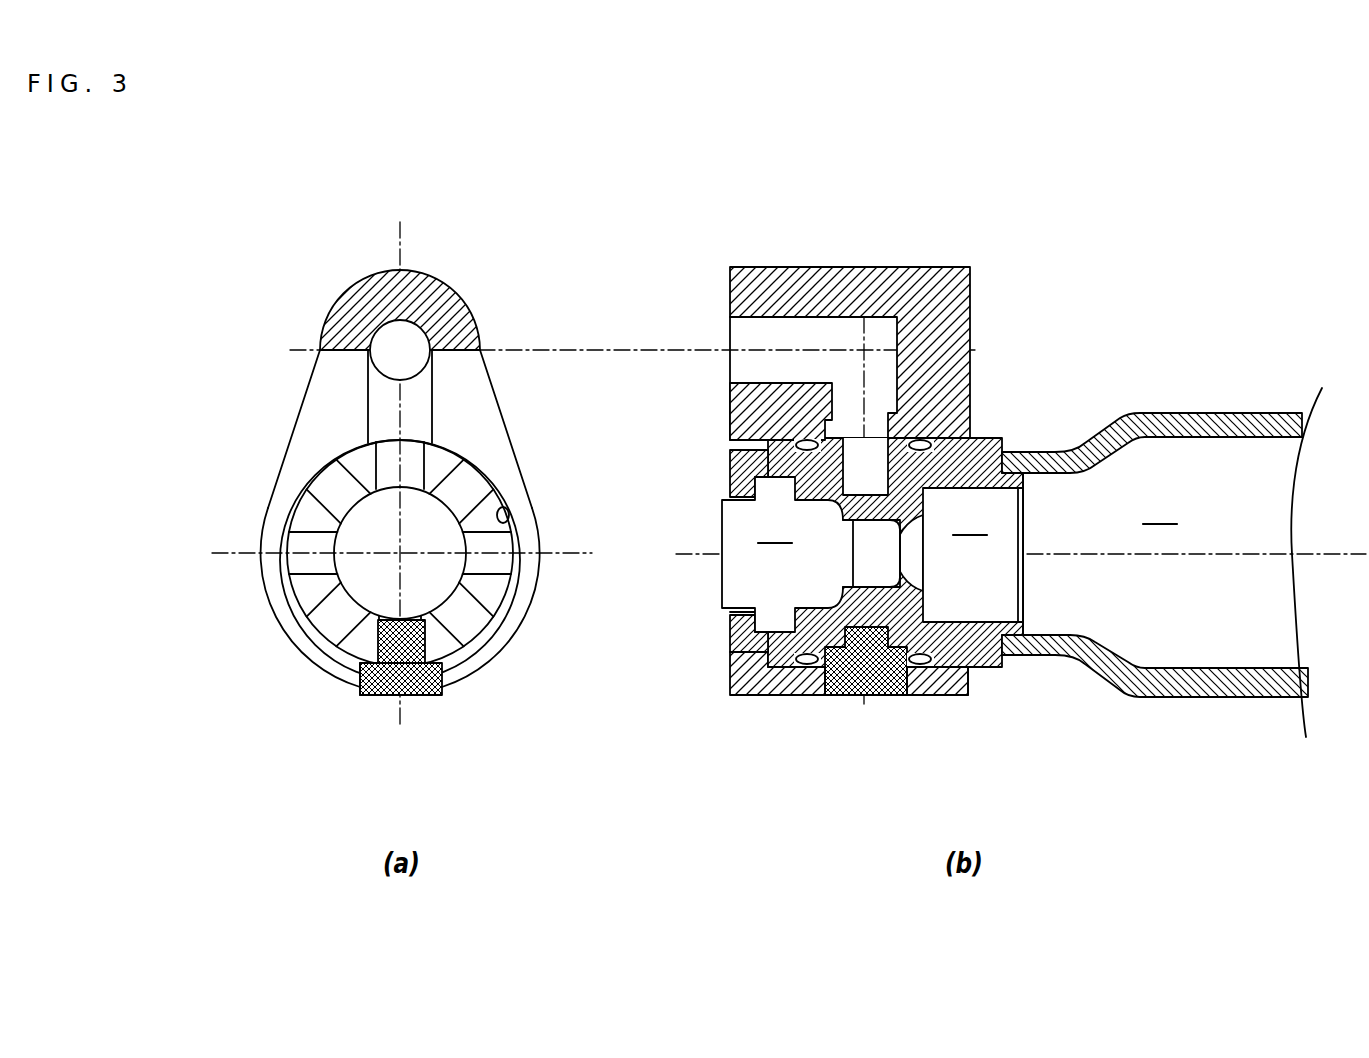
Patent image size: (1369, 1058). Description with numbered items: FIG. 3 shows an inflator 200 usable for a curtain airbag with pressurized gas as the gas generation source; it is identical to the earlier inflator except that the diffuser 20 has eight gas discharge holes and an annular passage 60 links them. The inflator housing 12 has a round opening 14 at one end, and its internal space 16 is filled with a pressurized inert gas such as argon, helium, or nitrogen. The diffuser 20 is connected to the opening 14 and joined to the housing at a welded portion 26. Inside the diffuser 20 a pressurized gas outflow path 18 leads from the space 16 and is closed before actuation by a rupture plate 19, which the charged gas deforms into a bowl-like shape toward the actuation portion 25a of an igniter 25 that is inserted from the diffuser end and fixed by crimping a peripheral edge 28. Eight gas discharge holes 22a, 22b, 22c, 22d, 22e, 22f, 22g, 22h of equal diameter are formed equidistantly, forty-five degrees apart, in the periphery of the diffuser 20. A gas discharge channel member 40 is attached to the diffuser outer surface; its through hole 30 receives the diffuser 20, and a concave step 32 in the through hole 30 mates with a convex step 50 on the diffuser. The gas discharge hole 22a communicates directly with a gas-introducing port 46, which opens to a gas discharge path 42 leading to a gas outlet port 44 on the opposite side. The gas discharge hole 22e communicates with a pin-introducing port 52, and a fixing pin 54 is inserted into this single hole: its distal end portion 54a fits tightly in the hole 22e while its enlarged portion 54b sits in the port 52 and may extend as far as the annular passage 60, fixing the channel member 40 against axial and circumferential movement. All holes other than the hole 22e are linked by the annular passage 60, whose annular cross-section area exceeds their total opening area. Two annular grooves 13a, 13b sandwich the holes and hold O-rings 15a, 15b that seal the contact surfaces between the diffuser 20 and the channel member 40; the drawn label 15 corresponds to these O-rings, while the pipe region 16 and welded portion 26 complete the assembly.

The inflator 200 is at (415, 182).
The inflator housing 12 is at (1250, 413).
The annular groove 13a is at (808, 665).
The annular groove 13b is at (920, 665).
The opening 14 is at (1030, 601).
The clearance 15 is at (450, 433).
The O-ring 15a is at (824, 693).
The O-ring 15b is at (906, 693).
The internal space 16 is at (1160, 508).
The pressurized gas outflow path 18 is at (973, 555).
The rupture plate 19 is at (1022, 533).
The diffuser 20 is at (310, 513).
The gas discharge hole 22a is at (390, 458).
The gas discharge hole 22b is at (317, 477).
The gas discharge hole 22c is at (297, 558).
The gas discharge hole 22d is at (337, 633).
The gas discharge hole 22e is at (427, 632).
The gas discharge hole 22f is at (477, 627).
The gas discharge hole 22g is at (500, 558).
The gas discharge hole 22h is at (497, 477).
The igniter 25 is at (811, 554).
The actuation portion 25a is at (860, 568).
The welded portion 26 is at (1000, 668).
The peripheral edge 28 is at (728, 612).
The through hole 30 is at (507, 527).
The concave step 32 is at (733, 468).
The gas discharge channel member 40 is at (428, 292).
The gas discharge path 42 is at (424, 390).
The gas outlet port 44 is at (386, 330).
The gas-introducing port 46 is at (867, 453).
The convex step 50 is at (750, 420).
The pin-introducing port 52 is at (437, 695).
The fixing pin 54 is at (222, 700).
The distal end portion 54a is at (360, 679).
The enlarged portion 54b is at (358, 692).
The annular passage 60 is at (470, 443).